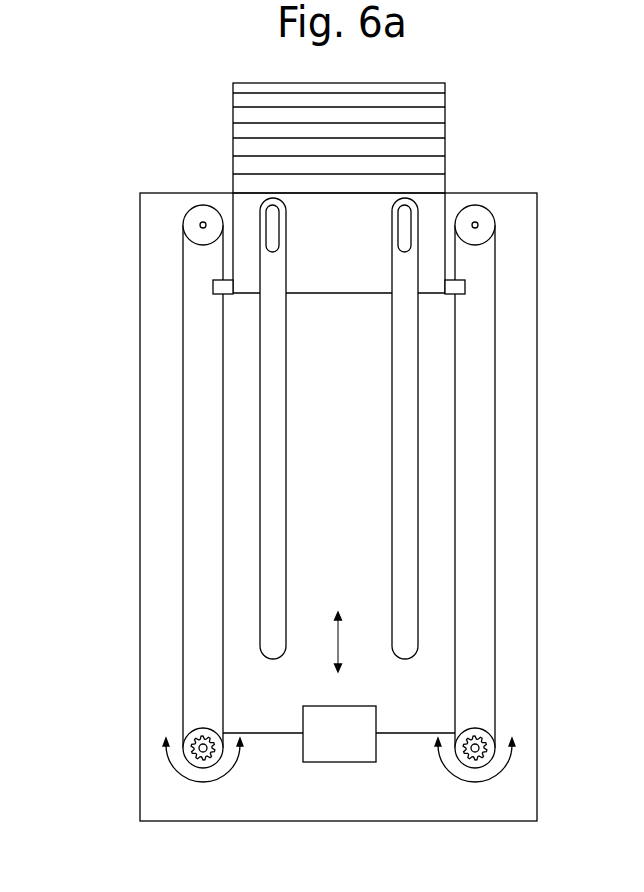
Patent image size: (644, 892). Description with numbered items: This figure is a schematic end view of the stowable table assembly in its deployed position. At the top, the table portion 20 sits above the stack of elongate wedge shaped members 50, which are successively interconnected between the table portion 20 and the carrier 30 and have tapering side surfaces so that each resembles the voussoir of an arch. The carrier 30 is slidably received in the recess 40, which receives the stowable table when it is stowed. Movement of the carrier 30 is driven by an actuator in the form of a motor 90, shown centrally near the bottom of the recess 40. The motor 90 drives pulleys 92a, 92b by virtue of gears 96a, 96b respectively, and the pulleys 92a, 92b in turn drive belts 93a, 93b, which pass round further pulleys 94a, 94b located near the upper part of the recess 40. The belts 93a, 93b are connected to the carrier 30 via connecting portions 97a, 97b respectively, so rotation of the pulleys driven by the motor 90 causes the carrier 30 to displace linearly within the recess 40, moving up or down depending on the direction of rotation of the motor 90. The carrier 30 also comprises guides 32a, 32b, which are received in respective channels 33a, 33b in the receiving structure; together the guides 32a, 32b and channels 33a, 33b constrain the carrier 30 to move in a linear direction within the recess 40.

The table portion 20 is at (253, 84).
The wedge shaped members 50 is at (460, 127).
The carrier 30 is at (354, 226).
The recess 40 is at (354, 808).
The guide 32a is at (412, 218).
The guide 32b is at (265, 220).
The channel 33a is at (418, 360).
The channel 33b is at (260, 357).
The motor 90 is at (354, 743).
The pulley 92a is at (487, 732).
The pulley 92b is at (193, 730).
The belt 93a is at (495, 437).
The belt 93b is at (183, 498).
The further pulley 94a is at (490, 222).
The further pulley 94b is at (188, 232).
The gear 96a is at (487, 755).
The gear 96b is at (197, 758).
The connecting portion 97a is at (465, 287).
The connecting portion 97b is at (213, 290).